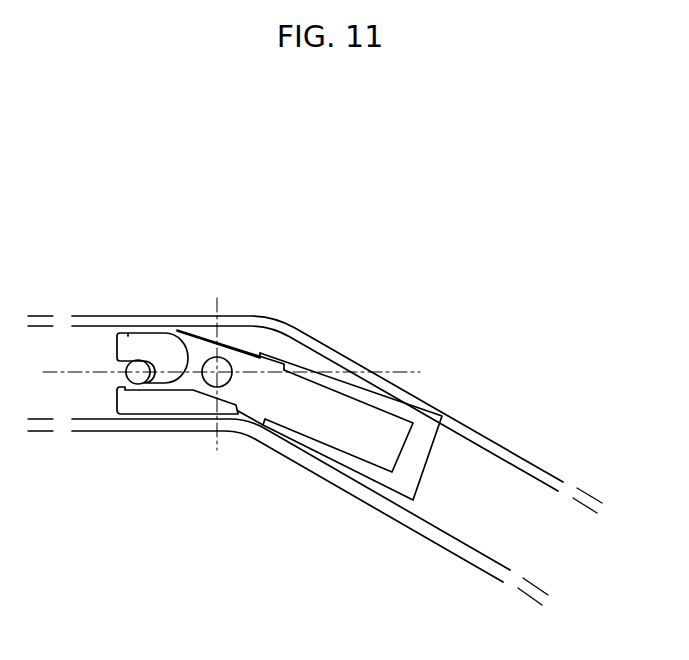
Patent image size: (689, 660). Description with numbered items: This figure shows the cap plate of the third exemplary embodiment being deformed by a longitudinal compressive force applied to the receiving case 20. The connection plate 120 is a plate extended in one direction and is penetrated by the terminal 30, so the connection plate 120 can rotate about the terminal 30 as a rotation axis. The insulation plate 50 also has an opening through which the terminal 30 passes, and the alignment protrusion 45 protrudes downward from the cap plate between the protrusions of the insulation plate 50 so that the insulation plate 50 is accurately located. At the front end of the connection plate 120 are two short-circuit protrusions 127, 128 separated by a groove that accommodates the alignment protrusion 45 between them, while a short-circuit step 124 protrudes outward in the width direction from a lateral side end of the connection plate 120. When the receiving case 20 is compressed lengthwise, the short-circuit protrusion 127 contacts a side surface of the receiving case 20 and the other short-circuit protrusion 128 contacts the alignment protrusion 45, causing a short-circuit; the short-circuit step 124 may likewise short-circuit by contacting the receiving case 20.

The receiving case 20 is at (393, 383).
The terminal 30 is at (220, 378).
The alignment protrusion 45 is at (138, 378).
The insulation plate 50 is at (433, 430).
The connection plate 120 is at (292, 400).
The short-circuit step 124 is at (268, 356).
The short-circuit protrusion 127 is at (162, 332).
The short-circuit protrusion 128 is at (163, 393).